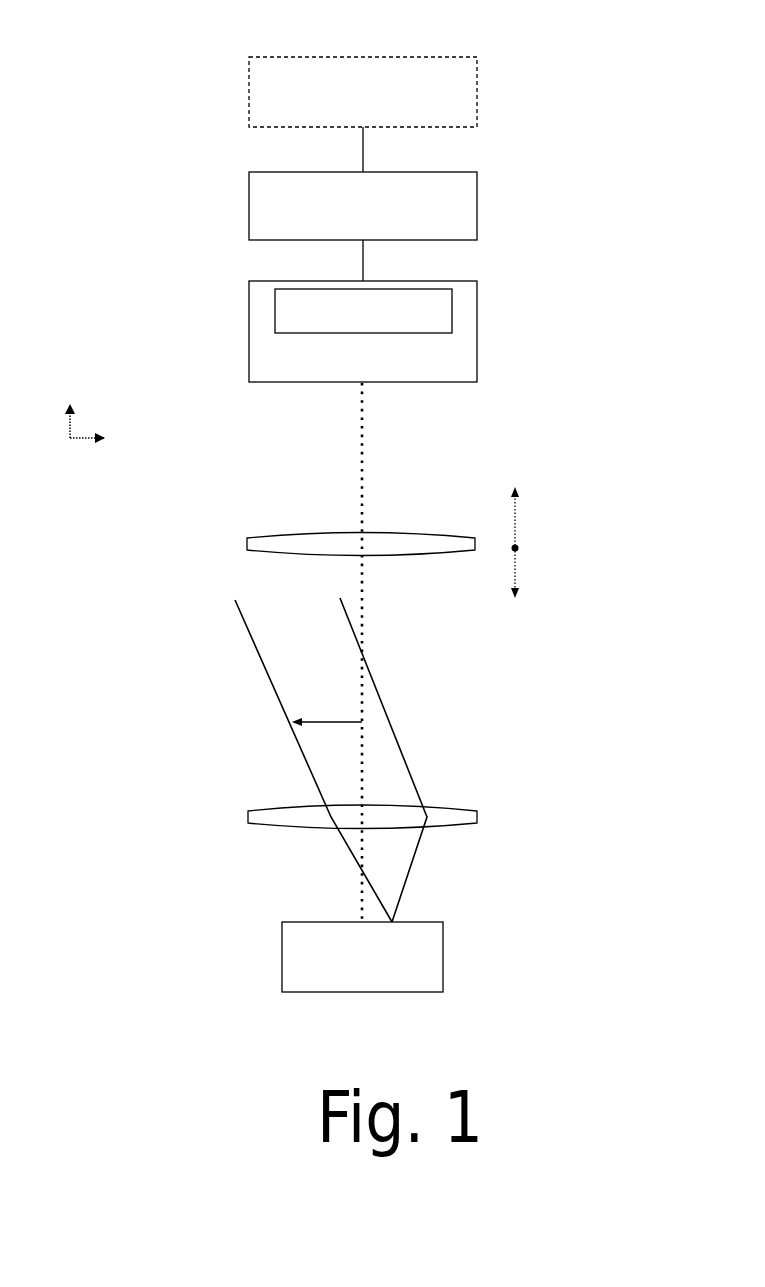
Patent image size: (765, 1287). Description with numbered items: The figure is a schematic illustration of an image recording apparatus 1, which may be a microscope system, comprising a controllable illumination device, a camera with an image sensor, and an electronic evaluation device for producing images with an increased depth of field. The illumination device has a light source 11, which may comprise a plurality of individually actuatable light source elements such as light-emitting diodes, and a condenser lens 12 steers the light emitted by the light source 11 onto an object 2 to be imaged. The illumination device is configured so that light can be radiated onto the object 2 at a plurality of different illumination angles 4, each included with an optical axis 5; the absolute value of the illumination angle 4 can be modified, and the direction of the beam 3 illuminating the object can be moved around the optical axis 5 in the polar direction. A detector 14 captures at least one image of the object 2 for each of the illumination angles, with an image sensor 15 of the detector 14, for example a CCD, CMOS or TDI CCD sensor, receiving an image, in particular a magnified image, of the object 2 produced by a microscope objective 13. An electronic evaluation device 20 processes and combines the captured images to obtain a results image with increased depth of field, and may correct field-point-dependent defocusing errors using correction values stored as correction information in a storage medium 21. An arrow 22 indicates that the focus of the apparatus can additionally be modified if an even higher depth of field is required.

The image recording apparatus 1 is at (626, 44).
The object 2 is at (322, 722).
The beam 3 is at (265, 673).
The illumination angle 4 is at (347, 600).
The optical axis 5 is at (362, 493).
The light source 11 is at (282, 935).
The condenser lens 12 is at (248, 814).
The microscope objective 13 is at (247, 540).
The detector 14 is at (334, 331).
The image sensor 15 is at (275, 310).
The electronic evaluation device 20 is at (249, 228).
The storage medium 21 is at (247, 107).
The arrow 22 is at (515, 548).